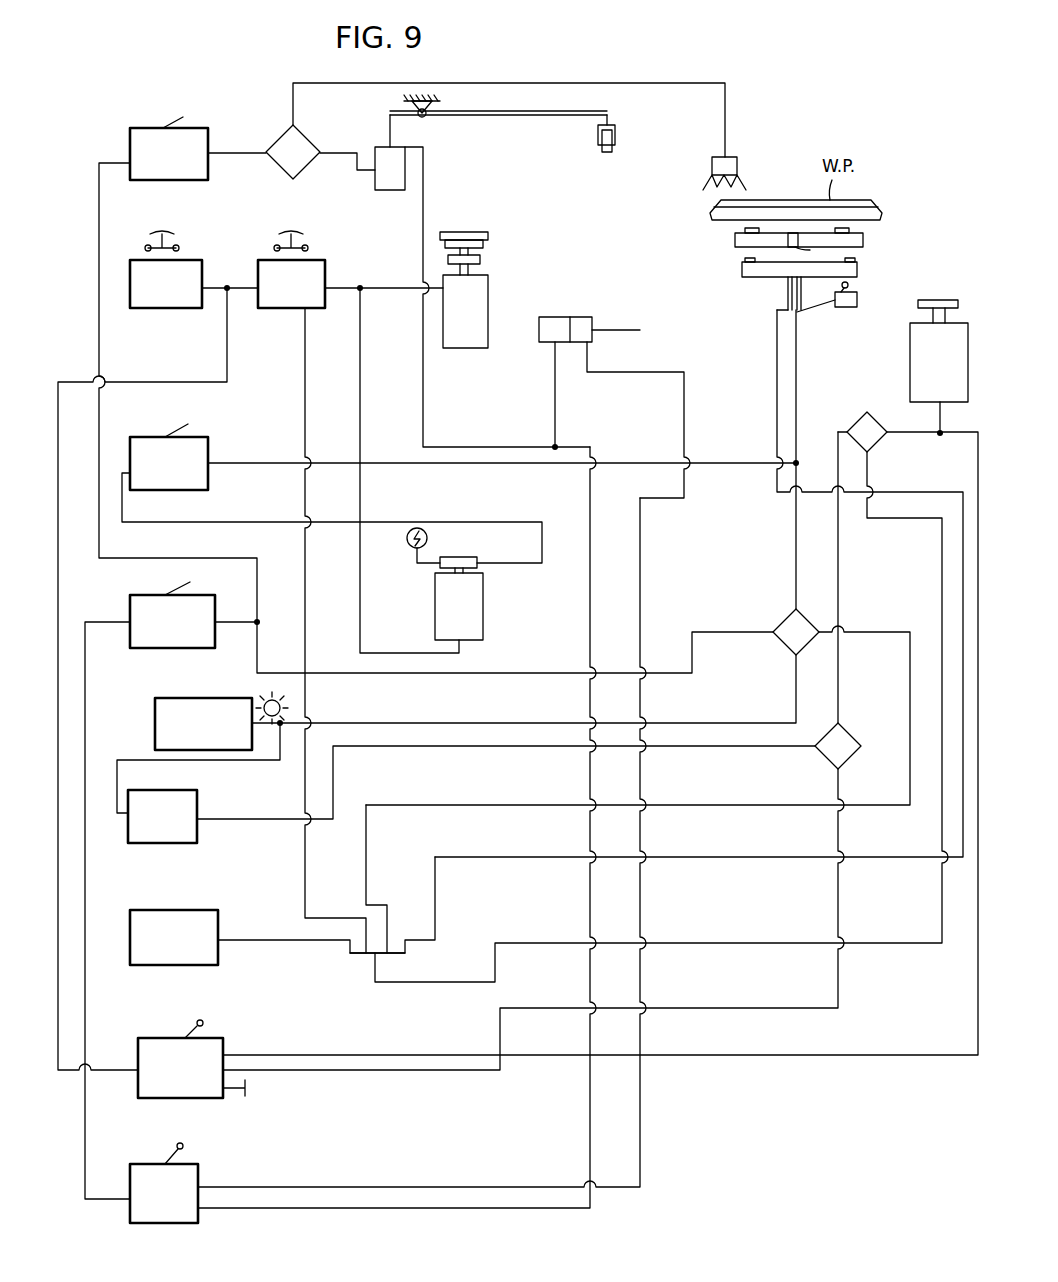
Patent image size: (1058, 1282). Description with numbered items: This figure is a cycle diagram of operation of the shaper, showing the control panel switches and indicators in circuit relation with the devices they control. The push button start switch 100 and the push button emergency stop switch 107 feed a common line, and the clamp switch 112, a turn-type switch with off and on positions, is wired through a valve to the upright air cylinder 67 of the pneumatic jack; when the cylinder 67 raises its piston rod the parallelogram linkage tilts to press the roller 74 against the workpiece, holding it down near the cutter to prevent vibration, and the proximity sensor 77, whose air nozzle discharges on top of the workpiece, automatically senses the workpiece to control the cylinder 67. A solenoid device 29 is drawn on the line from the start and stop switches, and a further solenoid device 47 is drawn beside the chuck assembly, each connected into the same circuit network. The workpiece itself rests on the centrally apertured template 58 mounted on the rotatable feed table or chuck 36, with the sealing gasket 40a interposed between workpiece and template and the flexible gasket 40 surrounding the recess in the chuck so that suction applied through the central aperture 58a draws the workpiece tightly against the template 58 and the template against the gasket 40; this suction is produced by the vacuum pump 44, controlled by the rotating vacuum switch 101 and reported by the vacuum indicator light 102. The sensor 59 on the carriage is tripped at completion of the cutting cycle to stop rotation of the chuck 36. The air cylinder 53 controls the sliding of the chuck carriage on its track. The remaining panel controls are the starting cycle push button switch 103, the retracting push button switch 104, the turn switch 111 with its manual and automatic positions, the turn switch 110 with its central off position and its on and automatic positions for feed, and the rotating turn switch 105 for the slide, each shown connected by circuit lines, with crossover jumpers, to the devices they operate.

The clamp switch 112 is at (212, 136).
The air cylinder 67 is at (376, 190).
The roller 74 is at (604, 155).
The start switch 100 is at (204, 262).
The emergency stop switch 107 is at (326, 268).
The solenoid 29 is at (478, 340).
The air cylinder 53 is at (563, 316).
The proximity sensor 77 is at (706, 168).
The sealing gasket 40a is at (848, 230).
The template 58 is at (735, 239).
The aperture 58a is at (810, 250).
The gasket 40 is at (742, 263).
The chuck 36 is at (770, 290).
The sensor 59 is at (860, 298).
The solenoid valve 47 is at (910, 360).
The vacuum switch 101 is at (210, 450).
The vacuum pump 44 is at (469, 584).
The turn switch 111 is at (217, 608).
The vacuum indicator light 102 is at (228, 697).
The starting cycle switch 103 is at (200, 804).
The retracting switch 104 is at (220, 916).
The turn switch 110 is at (225, 1037).
The turn switch 105 is at (200, 1168).